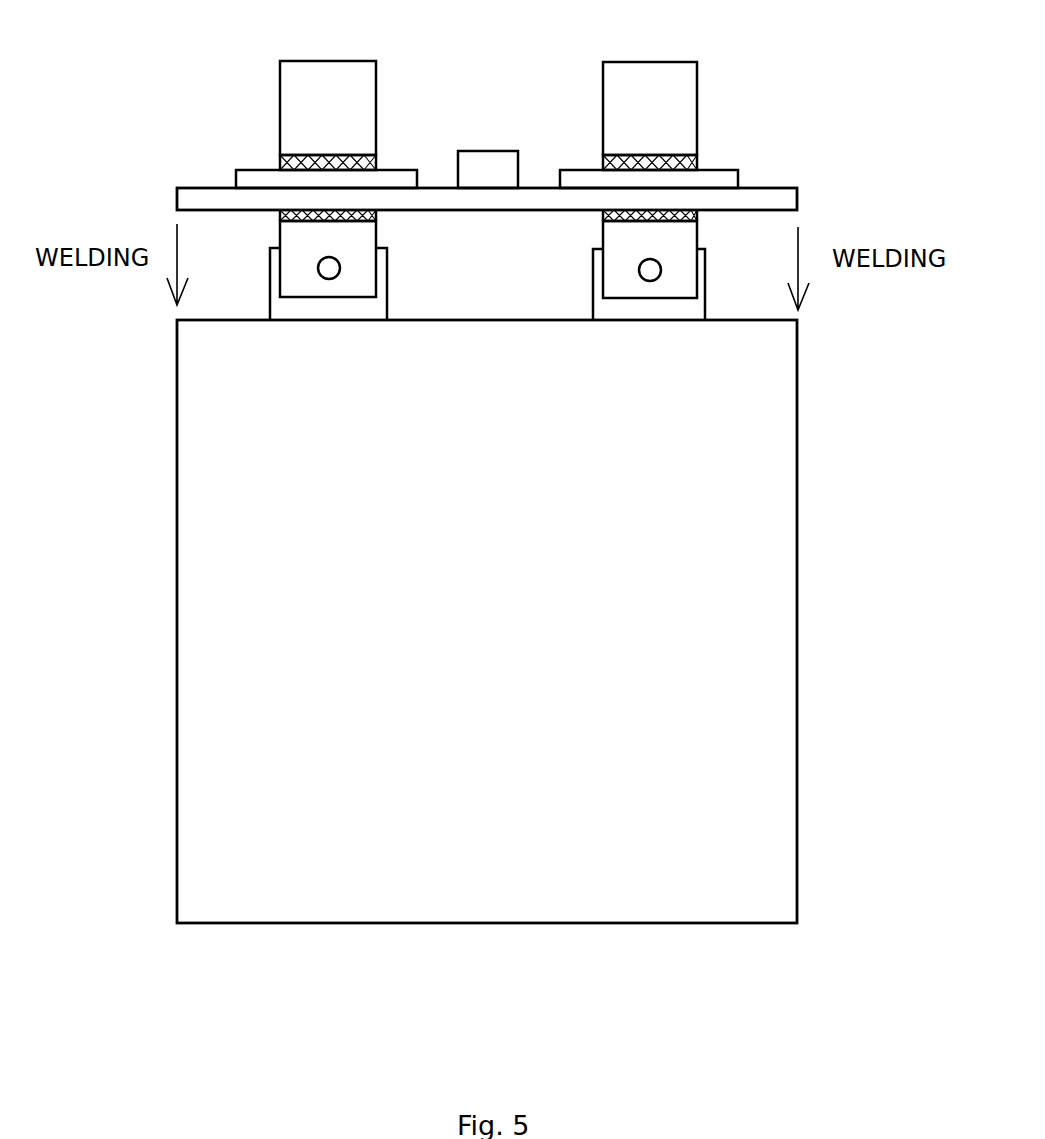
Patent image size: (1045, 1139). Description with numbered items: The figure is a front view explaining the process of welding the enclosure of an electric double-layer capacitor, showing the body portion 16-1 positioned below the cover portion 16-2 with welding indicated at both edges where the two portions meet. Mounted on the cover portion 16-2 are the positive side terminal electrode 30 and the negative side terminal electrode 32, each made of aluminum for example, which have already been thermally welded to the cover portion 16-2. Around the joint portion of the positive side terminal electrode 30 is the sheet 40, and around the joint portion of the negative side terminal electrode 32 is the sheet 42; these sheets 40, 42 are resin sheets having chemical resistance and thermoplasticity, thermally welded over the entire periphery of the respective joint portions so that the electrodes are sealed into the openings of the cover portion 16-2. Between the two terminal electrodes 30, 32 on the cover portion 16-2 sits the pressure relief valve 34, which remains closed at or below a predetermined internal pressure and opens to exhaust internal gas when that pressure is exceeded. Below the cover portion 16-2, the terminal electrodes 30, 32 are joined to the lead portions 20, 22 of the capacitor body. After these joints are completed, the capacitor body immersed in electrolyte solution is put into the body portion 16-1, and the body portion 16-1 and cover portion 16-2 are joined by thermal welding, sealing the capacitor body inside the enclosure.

The body portion 16-1 is at (277, 923).
The cover portion 16-2 is at (177, 198).
The lead portion 20 is at (277, 303).
The lead portion 22 is at (688, 308).
The positive side terminal electrode 30 is at (303, 77).
The negative side terminal electrode 32 is at (683, 80).
The pressure relief valve 34 is at (488, 151).
The sheet 40 is at (290, 162).
The sheet 42 is at (688, 165).